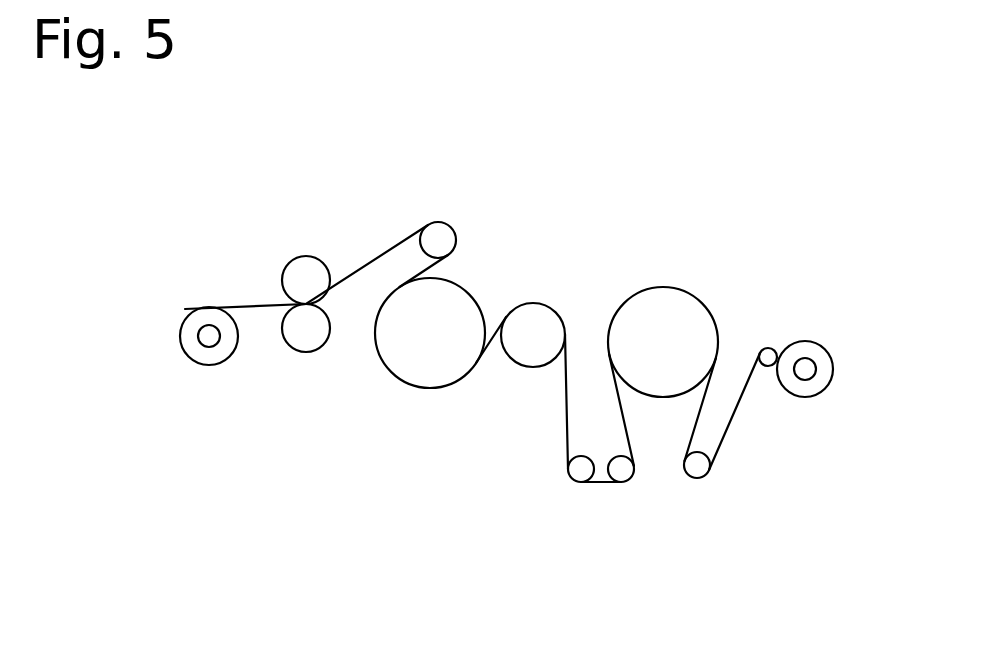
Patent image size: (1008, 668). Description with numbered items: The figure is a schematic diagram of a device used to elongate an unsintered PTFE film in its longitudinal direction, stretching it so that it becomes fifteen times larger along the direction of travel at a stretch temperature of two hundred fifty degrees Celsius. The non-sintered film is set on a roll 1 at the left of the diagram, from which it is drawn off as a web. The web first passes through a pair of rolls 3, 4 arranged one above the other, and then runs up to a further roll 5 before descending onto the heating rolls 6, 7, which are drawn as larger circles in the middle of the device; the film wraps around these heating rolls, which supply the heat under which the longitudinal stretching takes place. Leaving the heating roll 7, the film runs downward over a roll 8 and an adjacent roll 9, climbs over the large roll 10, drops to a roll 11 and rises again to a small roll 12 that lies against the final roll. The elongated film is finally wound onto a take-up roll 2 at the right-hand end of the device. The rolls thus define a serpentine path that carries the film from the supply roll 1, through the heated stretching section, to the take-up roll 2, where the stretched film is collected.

The roll 1 is at (225, 367).
The take-up roll 2 is at (830, 350).
The roll 3 is at (320, 354).
The roll 4 is at (287, 259).
The roll 5 is at (460, 223).
The heating roll 6 is at (434, 392).
The heating roll 7 is at (556, 307).
The roll 8 is at (566, 481).
The roll 9 is at (635, 486).
The roll 10 is at (682, 285).
The roll 11 is at (719, 478).
The roll 12 is at (768, 346).